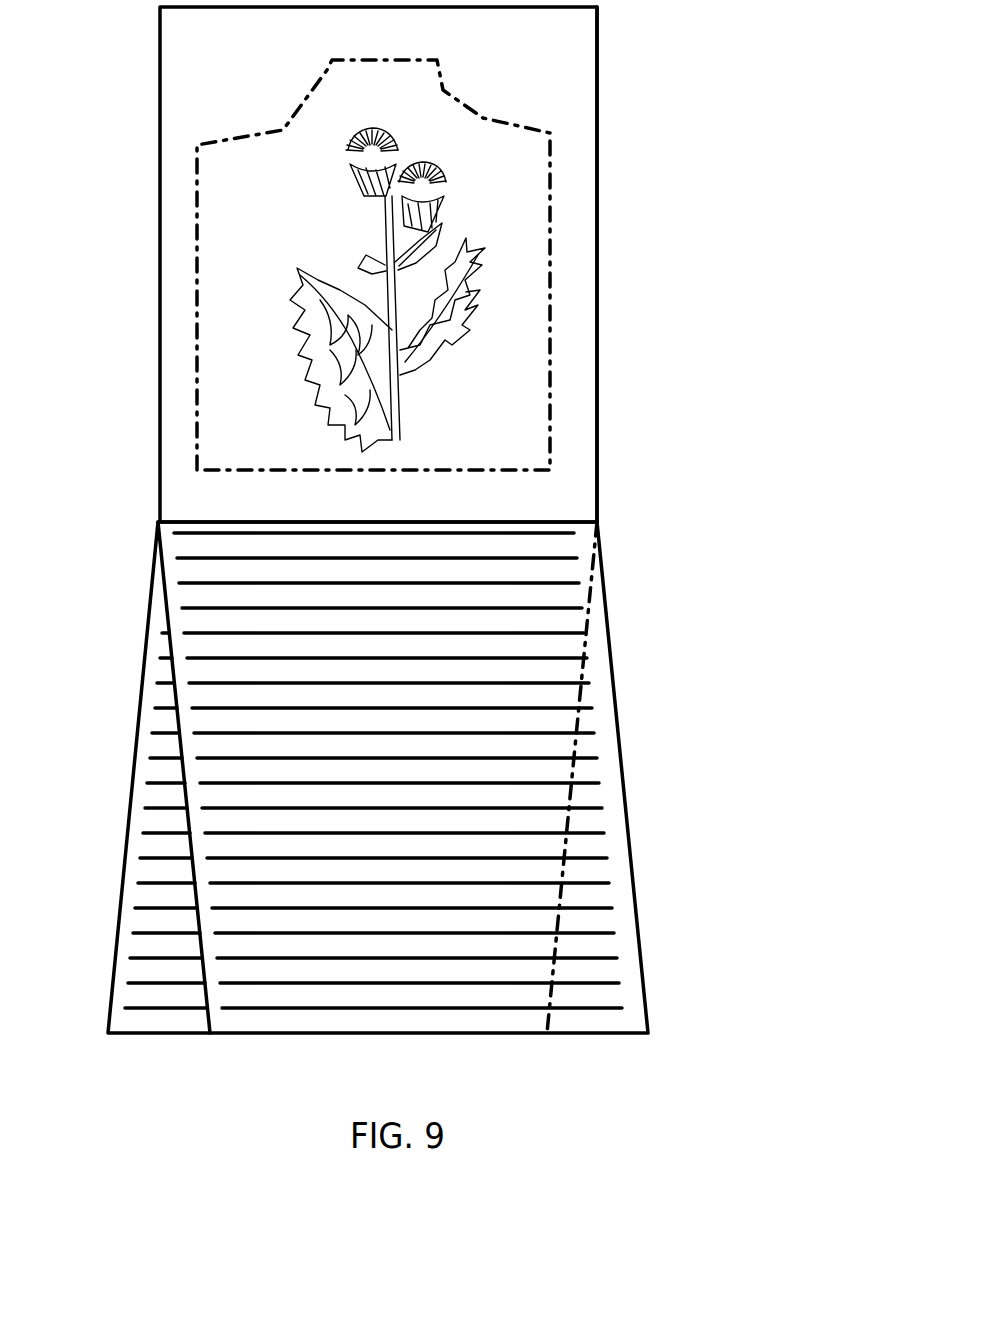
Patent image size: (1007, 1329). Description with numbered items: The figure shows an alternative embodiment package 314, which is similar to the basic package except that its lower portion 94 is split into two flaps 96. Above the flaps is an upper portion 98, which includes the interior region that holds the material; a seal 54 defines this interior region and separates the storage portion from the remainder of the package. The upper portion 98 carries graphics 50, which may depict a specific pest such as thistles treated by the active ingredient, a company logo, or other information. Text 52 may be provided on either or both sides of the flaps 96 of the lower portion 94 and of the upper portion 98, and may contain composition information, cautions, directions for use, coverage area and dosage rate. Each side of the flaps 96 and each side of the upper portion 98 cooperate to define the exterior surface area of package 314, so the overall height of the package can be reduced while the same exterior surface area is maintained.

The upper portion 98 is at (628, 188).
The package 314 is at (617, 300).
The seal 54 is at (290, 118).
The graphics 50 is at (278, 262).
The lower portion 94 is at (700, 653).
The flaps 96 is at (638, 858).
The text 52 is at (545, 633).